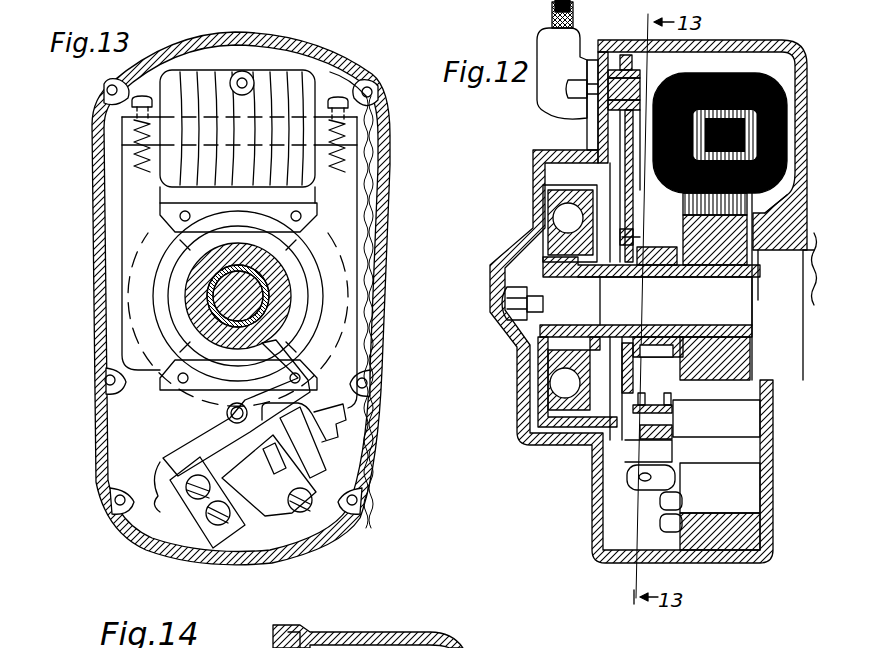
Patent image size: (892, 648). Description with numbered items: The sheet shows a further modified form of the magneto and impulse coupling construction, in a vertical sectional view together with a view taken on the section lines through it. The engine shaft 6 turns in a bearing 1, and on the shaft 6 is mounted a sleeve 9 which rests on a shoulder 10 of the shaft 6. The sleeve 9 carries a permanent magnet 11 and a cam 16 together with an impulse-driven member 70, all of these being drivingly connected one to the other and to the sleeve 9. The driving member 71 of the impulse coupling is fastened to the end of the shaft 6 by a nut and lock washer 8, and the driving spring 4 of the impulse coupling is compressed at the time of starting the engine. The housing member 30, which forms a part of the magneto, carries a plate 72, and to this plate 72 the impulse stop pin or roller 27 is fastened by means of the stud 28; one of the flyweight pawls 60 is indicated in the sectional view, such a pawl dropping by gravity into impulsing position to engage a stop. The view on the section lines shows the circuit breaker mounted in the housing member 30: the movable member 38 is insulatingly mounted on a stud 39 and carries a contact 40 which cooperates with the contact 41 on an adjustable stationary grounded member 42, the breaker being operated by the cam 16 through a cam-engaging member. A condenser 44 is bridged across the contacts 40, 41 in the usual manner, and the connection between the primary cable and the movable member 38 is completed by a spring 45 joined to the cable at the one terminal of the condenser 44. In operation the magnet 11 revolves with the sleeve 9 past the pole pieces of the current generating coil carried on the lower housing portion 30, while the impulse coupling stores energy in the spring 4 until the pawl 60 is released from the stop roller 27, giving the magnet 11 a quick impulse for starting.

In FIG. 12, the bearing 1 is at (787, 347).
In FIG. 12, the driving spring 4 is at (565, 396).
In FIG. 12, the engine shaft 6 is at (734, 310).
In FIG. 12, the nut and lock washer 8 is at (503, 333).
In FIG. 12, the sleeve 9 is at (661, 325).
In FIG. 12, the shoulder 10 is at (763, 297).
In FIG. 12, the permanent magnet 11 is at (693, 358).
In FIG. 12, the cam 16 is at (663, 251).
In FIG. 12, the stop member 27 is at (612, 253).
In FIG. 12, the stud 28 is at (634, 238).
In FIG. 13, the lower housing portion 30 is at (363, 500).
In FIG. 12, the lower housing portion 30 is at (750, 556).
In FIG. 13, the movable member 38 is at (198, 432).
In FIG. 13, the stud 39 is at (227, 411).
In FIG. 13, the contact 40 is at (162, 470).
In FIG. 13, the contact 41 is at (172, 482).
In FIG. 13, the adjustable stationary grounded member 42 is at (205, 518).
In FIG. 13, the condenser 44 is at (310, 467).
In FIG. 13, the spring 45 is at (268, 440).
In FIG. 12, the flyweight pawl 60 is at (607, 200).
In FIG. 12, the impulse-driven member 70 is at (567, 197).
In FIG. 12, the driving member 71 is at (540, 248).
In FIG. 12, the plate 72 is at (632, 62).
In FIG. 14, the plate 72 is at (336, 632).